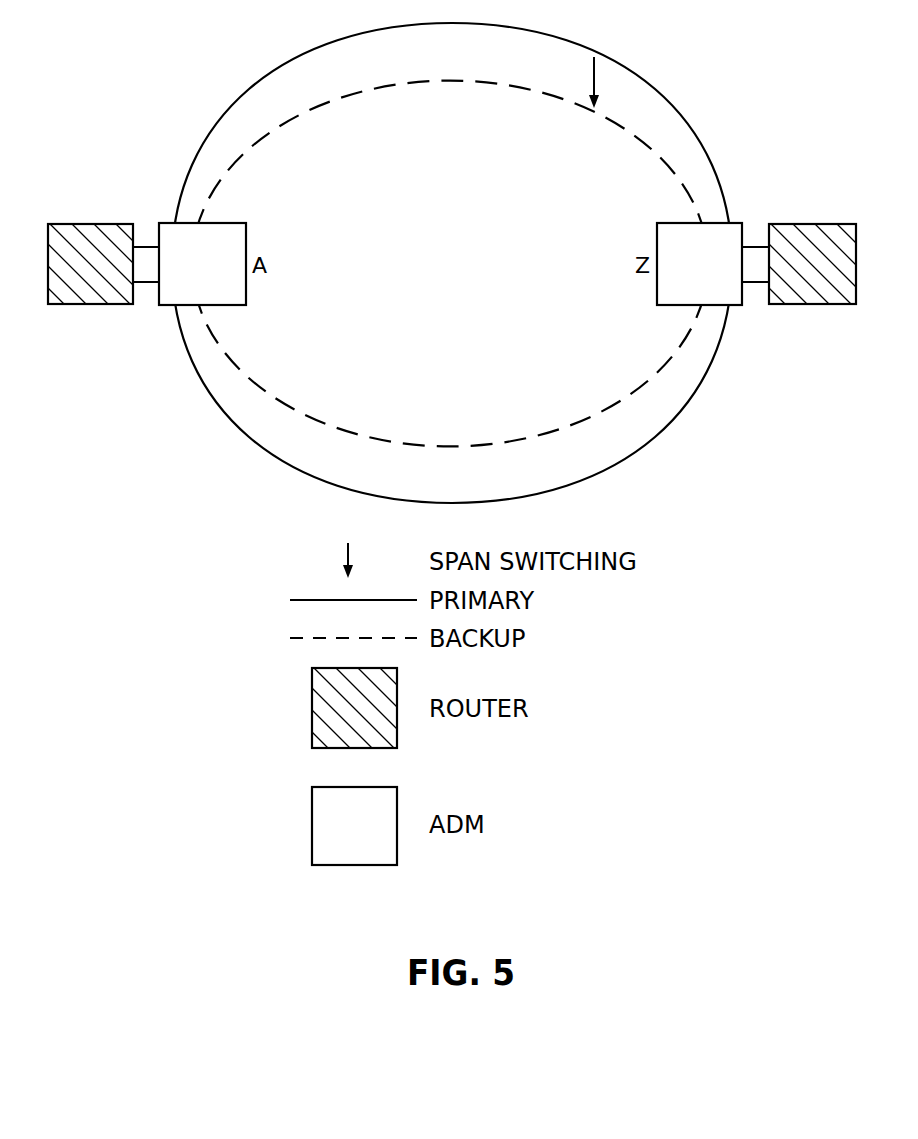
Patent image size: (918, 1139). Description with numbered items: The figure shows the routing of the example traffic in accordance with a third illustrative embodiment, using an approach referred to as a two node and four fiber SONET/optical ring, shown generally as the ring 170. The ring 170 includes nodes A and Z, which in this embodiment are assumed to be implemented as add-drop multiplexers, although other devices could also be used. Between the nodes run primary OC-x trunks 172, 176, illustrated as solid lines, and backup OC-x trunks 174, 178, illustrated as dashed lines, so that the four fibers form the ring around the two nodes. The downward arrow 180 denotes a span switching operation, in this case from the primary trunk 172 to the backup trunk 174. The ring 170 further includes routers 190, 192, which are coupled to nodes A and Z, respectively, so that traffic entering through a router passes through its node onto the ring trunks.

The 2 node and 4 fiber SONET/optical ring 170 is at (181, 106).
The primary OC-x trunk 172 is at (272, 70).
The backup OC-x trunk 174 is at (323, 103).
The primary OC-x trunk 176 is at (272, 457).
The backup OC-x trunk 178 is at (322, 423).
The downward arrow 180 is at (595, 80).
The router 190 is at (90, 224).
The router 192 is at (813, 224).